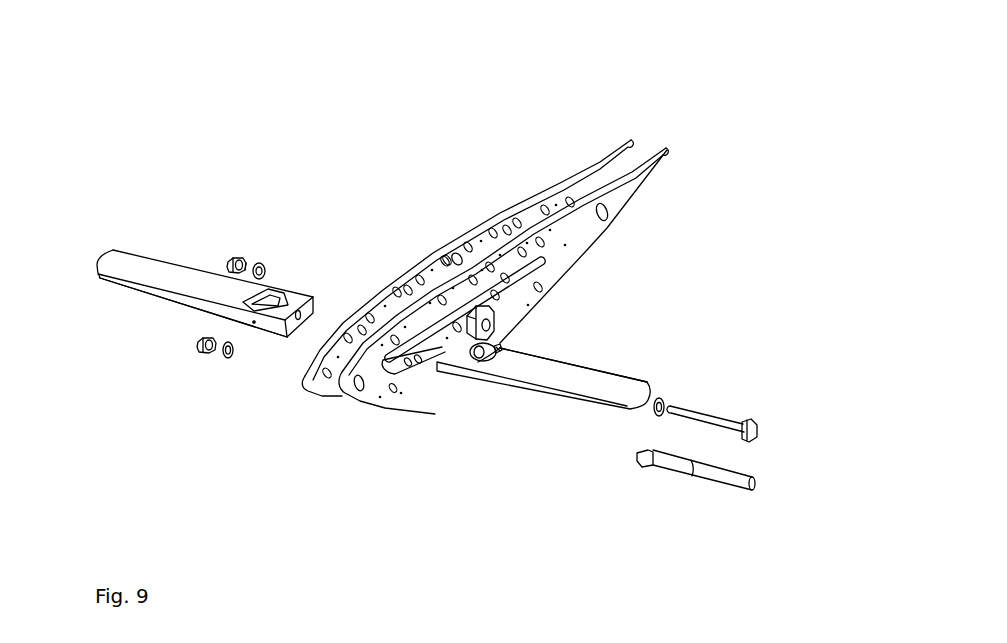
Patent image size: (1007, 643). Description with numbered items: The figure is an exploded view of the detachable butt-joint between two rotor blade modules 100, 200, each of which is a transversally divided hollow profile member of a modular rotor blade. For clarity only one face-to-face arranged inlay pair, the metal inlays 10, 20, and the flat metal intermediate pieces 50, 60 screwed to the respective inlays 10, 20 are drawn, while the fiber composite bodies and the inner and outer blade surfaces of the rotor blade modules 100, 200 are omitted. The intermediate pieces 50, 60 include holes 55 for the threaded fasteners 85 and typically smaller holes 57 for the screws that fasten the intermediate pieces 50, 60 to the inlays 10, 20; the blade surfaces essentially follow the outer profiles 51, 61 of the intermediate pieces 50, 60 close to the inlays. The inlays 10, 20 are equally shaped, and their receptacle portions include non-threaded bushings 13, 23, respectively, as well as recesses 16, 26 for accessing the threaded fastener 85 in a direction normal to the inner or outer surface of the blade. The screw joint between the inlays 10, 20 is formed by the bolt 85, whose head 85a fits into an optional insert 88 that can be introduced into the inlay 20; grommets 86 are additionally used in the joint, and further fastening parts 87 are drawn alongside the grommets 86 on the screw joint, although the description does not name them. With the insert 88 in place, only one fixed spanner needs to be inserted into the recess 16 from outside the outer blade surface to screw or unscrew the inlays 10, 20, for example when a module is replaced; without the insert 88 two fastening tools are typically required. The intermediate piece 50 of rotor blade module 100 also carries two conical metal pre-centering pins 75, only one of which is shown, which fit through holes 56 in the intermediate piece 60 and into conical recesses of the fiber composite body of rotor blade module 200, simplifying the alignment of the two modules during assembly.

The inlay 10 is at (132, 245).
The non-threaded bushing 13 is at (293, 323).
The recess 16 is at (276, 290).
The inlay 20 is at (501, 394).
The non-threaded bushing 23 is at (475, 360).
The recess 26 is at (501, 350).
The intermediate piece 50 is at (547, 207).
The outer profile 51 is at (587, 170).
The hole 55 is at (455, 255).
The hole 56 is at (610, 220).
The hole 57 is at (467, 243).
The intermediate piece 60 is at (625, 192).
The outer profile 61 is at (667, 146).
The conical metal pre-centering pin 75 is at (678, 467).
The bolt 85 is at (712, 420).
The head 85a is at (757, 430).
The grommet 86 is at (261, 263).
The nut 87 is at (239, 258).
The insert 88 is at (492, 320).
The rotor blade module 100 is at (351, 137).
The rotor blade module 200 is at (783, 301).